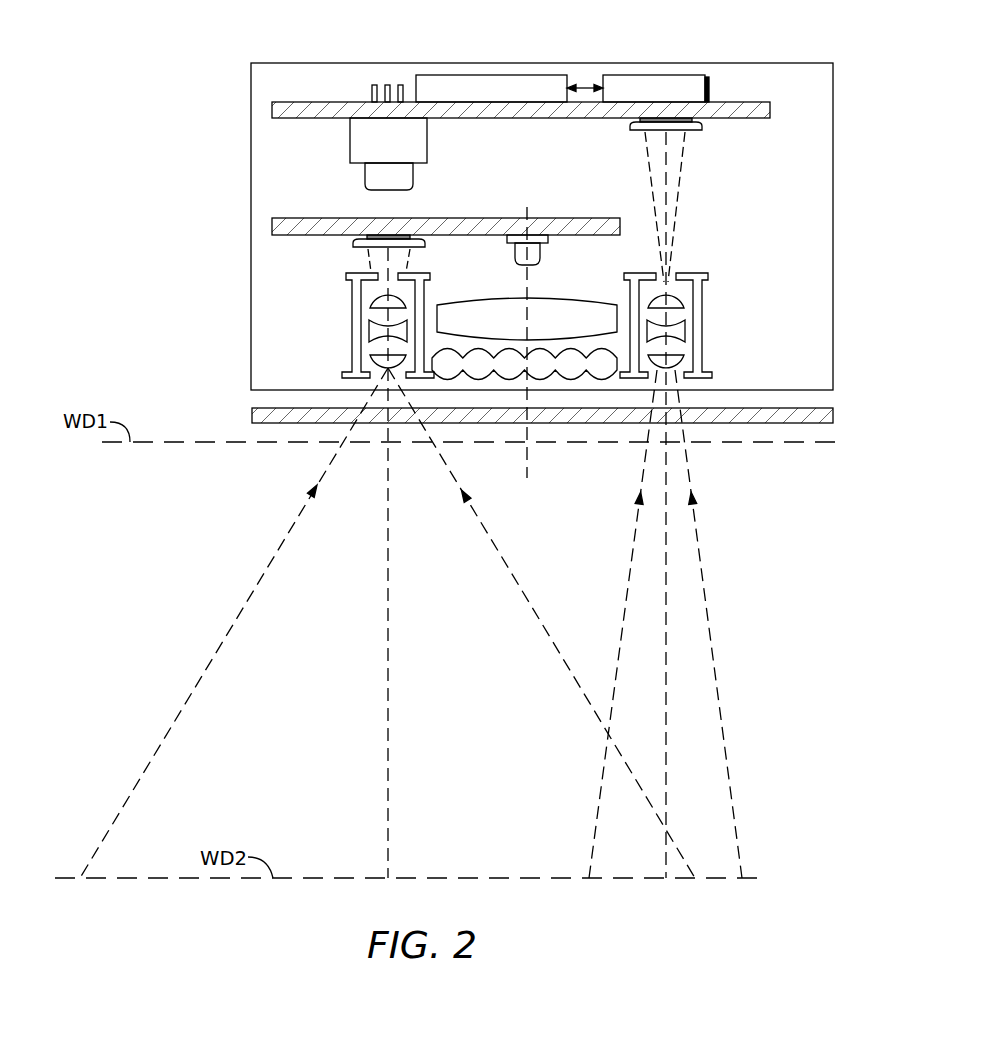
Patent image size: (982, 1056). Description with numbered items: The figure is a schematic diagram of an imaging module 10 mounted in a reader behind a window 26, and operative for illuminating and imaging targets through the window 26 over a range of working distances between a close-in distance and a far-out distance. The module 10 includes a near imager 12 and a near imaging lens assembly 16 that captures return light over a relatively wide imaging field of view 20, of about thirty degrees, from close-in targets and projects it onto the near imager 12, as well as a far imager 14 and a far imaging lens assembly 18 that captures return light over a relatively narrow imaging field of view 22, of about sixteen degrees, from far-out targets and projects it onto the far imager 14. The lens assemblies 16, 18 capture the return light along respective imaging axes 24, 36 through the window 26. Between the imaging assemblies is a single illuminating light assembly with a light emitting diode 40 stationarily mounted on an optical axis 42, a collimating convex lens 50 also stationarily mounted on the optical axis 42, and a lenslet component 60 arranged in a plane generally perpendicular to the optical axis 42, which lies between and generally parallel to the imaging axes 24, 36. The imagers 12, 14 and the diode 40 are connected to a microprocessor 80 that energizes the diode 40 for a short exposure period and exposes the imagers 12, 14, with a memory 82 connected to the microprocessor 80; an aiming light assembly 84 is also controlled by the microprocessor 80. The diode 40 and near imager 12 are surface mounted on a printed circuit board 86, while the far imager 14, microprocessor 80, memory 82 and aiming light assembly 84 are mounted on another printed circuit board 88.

The imaging module 10 is at (157, 33).
The near imager 12 is at (353, 243).
The far imager 14 is at (694, 132).
The near imaging lens assembly 16 is at (372, 347).
The far imaging lens assembly 18 is at (688, 295).
The wide imaging field of view 20 is at (212, 657).
The narrow imaging field of view 22 is at (697, 543).
The imaging axis 24 is at (388, 672).
The window 26 is at (252, 415).
The imaging axis 36 is at (666, 672).
The light emitting diode 40 is at (512, 256).
The optical axis 42 is at (528, 462).
The collimating convex lens 50 is at (455, 302).
The lenslet component 60 is at (578, 378).
The microprocessor 80 is at (490, 75).
The memory 82 is at (660, 75).
The aiming light assembly 84 is at (364, 185).
The printed circuit board 86 is at (590, 218).
The printed circuit board 88 is at (752, 102).